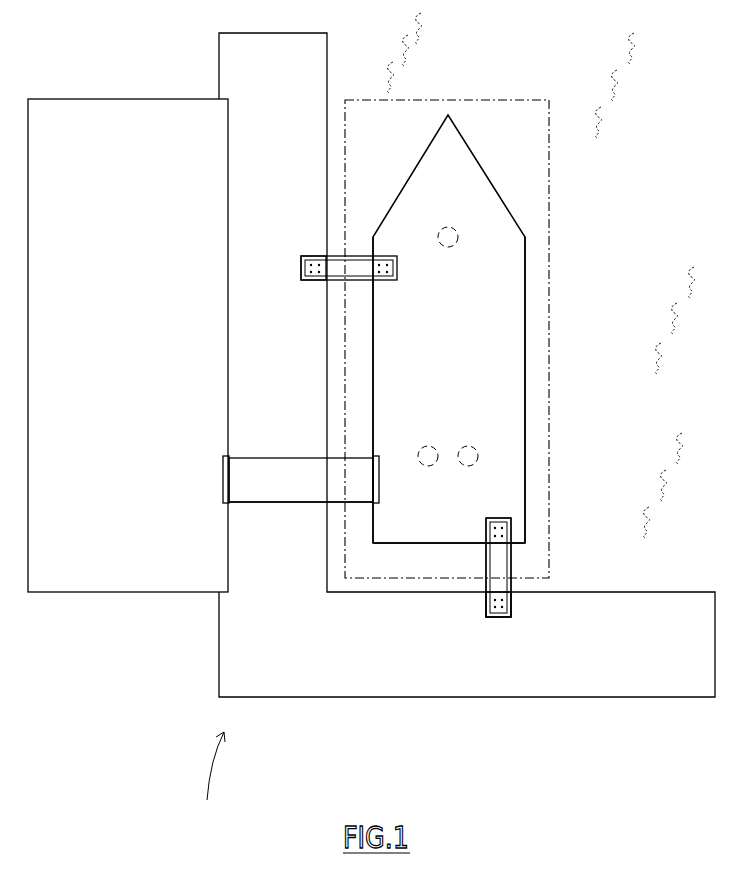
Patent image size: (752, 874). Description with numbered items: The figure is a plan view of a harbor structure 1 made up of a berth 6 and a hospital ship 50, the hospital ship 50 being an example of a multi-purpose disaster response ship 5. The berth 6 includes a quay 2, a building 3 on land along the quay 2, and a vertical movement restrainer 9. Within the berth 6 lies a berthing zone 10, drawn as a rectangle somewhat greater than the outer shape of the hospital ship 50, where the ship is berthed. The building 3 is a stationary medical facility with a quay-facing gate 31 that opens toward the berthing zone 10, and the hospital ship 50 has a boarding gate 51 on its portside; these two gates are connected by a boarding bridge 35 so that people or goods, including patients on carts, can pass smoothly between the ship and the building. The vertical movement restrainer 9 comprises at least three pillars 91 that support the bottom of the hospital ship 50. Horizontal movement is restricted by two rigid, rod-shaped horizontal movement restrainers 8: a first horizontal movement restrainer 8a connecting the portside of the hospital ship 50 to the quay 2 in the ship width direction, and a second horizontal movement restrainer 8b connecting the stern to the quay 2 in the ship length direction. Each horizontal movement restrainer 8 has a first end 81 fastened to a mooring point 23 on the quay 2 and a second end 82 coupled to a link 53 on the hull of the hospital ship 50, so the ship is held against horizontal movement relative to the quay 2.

The harbor structure 1 is at (613, 200).
The quay 2 is at (360, 698).
The building 3 is at (110, 594).
The berth 6 is at (214, 781).
The berthing zone 10 is at (491, 100).
The multi-purpose disaster response ship 5 is at (490, 346).
The hospital ship 50 is at (490, 346).
The boarding gate 51 is at (383, 502).
The link 53 is at (390, 282).
The vertical movement restrainer 9 is at (514, 302).
The pillar 91 is at (452, 228).
The horizontal movement restrainer 8 is at (448, 371).
The first horizontal movement restrainer 8a is at (448, 371).
The second horizontal movement restrainer 8b is at (489, 562).
The first end 81 is at (315, 272).
The second end 82 is at (388, 265).
The mooring point 23 is at (305, 282).
The quay-facing gate 31 is at (223, 487).
The boarding bridge 35 is at (297, 502).